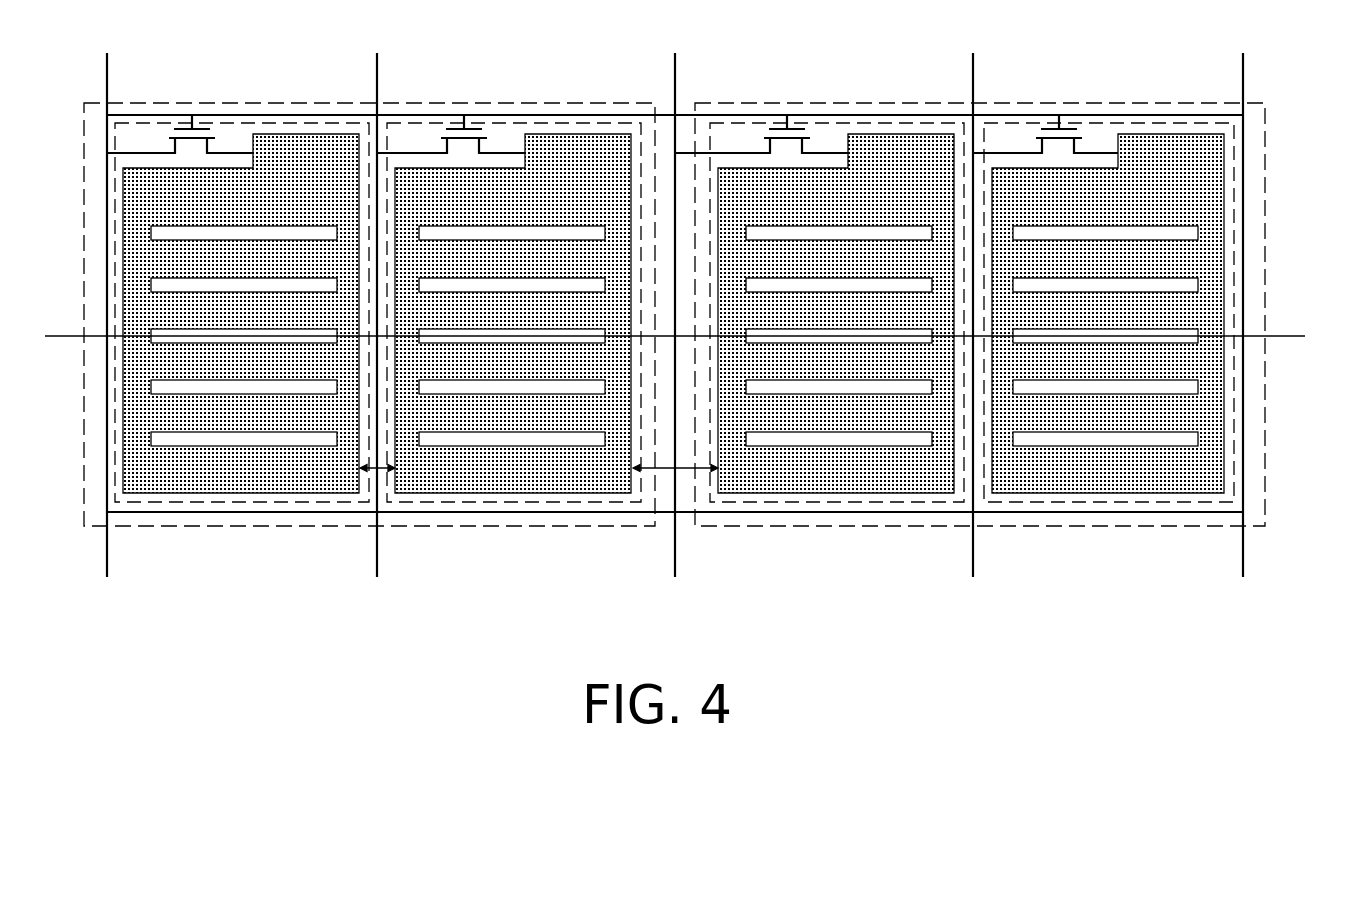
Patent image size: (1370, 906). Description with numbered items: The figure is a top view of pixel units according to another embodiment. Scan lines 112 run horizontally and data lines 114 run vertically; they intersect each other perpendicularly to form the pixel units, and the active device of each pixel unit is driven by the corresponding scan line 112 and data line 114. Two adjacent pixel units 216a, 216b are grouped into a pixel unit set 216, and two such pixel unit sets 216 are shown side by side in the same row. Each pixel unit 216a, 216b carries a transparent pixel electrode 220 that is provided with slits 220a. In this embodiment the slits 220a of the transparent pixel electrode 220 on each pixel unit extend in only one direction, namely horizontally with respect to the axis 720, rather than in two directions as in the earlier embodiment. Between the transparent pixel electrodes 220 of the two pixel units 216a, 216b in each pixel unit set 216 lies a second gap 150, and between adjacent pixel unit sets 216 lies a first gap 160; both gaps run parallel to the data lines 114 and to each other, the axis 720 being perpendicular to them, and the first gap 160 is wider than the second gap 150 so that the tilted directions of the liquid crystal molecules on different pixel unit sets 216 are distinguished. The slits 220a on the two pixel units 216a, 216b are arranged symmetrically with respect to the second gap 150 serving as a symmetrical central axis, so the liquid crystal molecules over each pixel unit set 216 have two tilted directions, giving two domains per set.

The data line 114 is at (105, 88).
The scan line 112 is at (258, 113).
The pixel unit set 216 is at (163, 527).
The pixel unit 216a is at (243, 502).
The pixel unit 216b is at (508, 502).
The transparent pixel electrode 220 is at (308, 163).
The slit 220a is at (170, 233).
The second gap 150 is at (377, 470).
The first gap 160 is at (667, 468).
The axis 720 is at (702, 339).